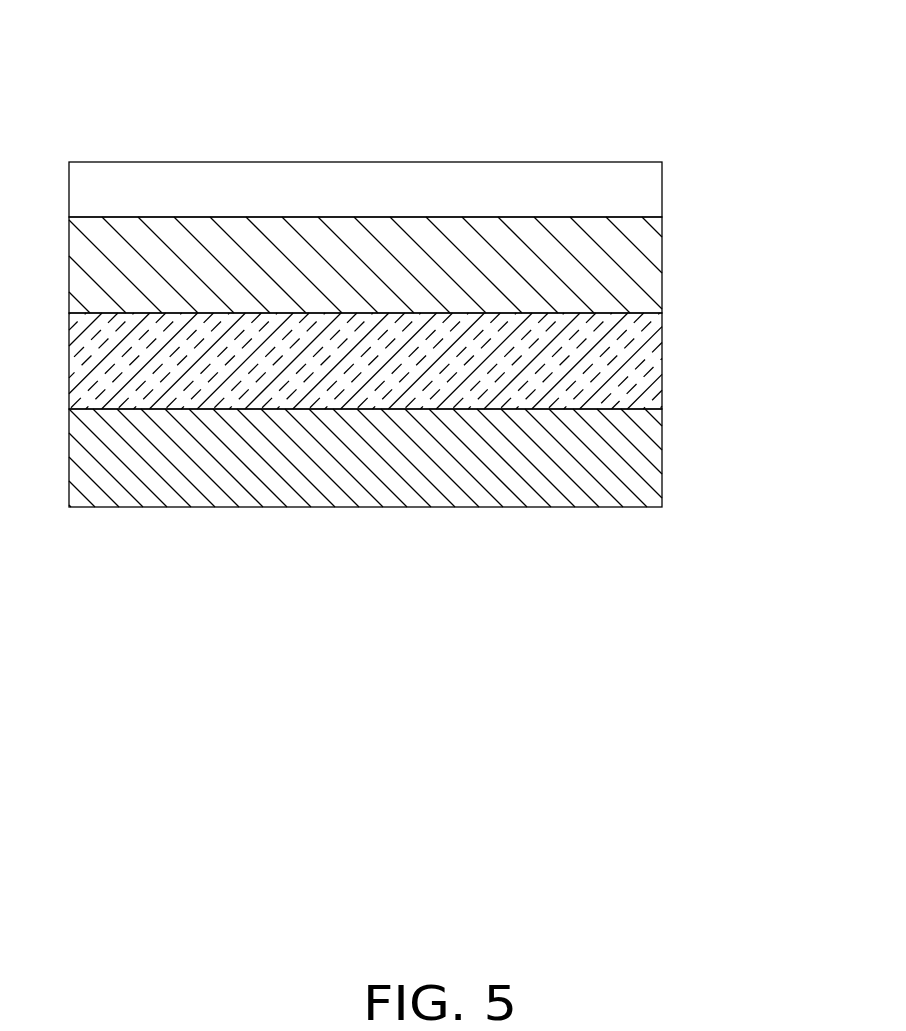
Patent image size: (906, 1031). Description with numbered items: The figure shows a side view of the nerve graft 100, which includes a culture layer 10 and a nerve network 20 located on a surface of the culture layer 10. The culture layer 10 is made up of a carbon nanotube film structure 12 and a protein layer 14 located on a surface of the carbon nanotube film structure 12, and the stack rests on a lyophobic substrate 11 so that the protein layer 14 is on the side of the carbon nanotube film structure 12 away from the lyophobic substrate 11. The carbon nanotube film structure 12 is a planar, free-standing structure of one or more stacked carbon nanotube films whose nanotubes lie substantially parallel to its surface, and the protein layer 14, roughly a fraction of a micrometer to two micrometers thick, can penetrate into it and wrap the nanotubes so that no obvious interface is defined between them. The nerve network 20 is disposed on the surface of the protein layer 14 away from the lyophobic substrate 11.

The nerve graft 100 is at (460, 80).
The nerve network 20 is at (640, 192).
The protein layer 14 is at (623, 265).
The carbon nanotube film structure 12 is at (627, 367).
The lyophobic substrate 11 is at (407, 458).
The culture layer 10 is at (441, 362).